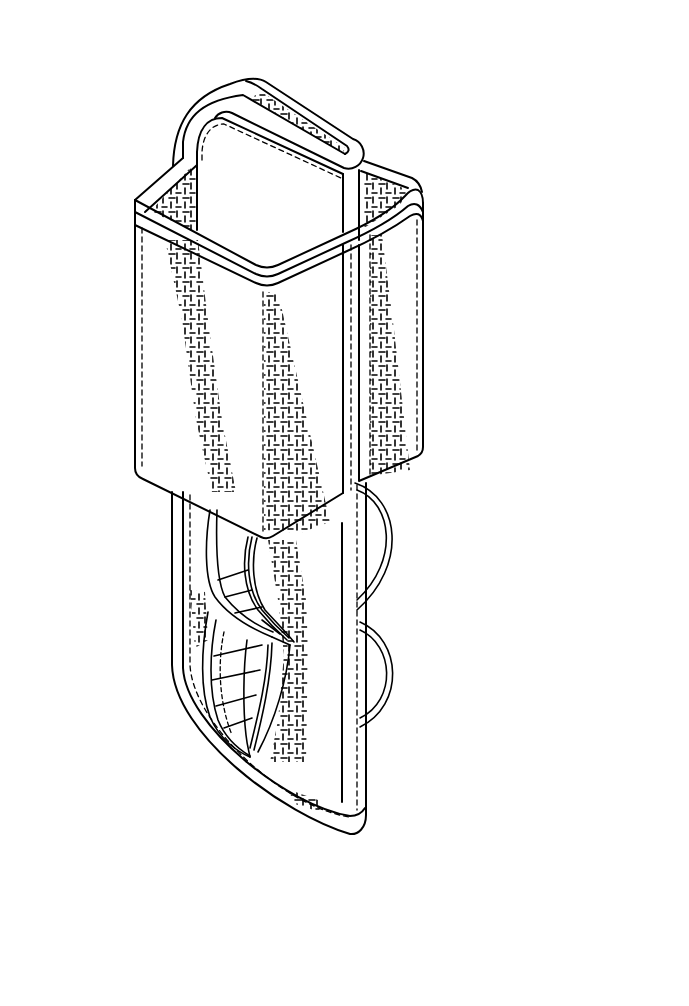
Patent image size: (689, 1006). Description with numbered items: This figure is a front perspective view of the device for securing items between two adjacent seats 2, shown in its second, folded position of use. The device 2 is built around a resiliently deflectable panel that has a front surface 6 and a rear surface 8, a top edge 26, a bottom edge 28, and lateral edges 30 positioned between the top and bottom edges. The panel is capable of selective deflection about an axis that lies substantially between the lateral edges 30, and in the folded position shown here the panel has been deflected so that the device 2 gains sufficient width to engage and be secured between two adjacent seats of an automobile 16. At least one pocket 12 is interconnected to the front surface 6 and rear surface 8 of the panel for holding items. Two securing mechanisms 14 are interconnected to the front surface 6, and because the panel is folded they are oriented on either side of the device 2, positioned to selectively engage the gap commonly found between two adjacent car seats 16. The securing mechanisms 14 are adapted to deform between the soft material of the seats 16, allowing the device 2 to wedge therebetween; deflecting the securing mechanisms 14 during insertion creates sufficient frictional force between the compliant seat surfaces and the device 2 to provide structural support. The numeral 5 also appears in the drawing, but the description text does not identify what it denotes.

The device for securing items between two adjacent seats 2 is at (413, 140).
The fastener 5 is at (265, 620).
The front surface 6 is at (262, 632).
The rear surface 8 is at (173, 150).
The pocket 12 is at (173, 377).
The securing mechanism 14 is at (393, 550).
The adjacent car seats 16 is at (353, 670).
The top edge 26 is at (283, 95).
The bottom edge 28 is at (253, 787).
The lateral edges 30 is at (170, 560).